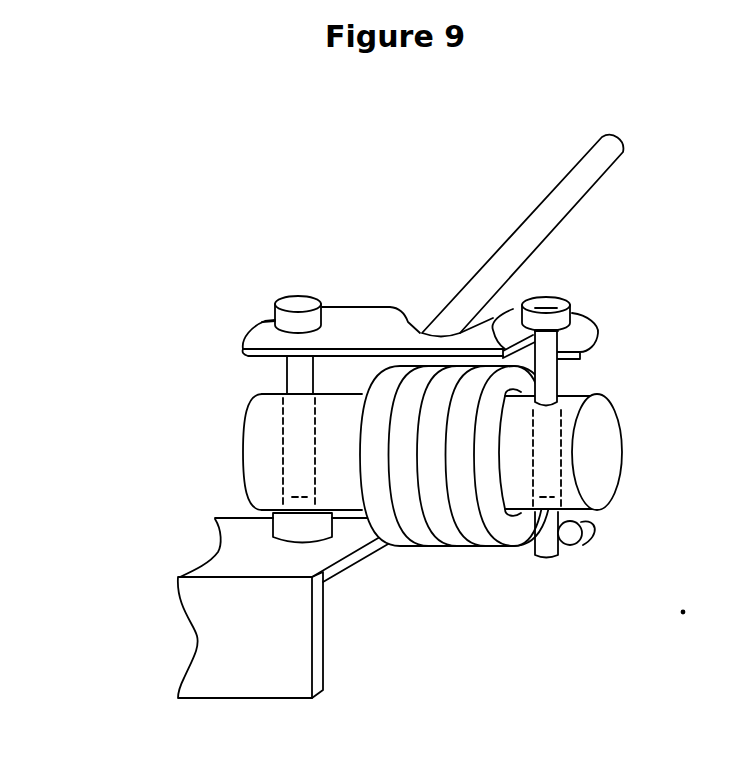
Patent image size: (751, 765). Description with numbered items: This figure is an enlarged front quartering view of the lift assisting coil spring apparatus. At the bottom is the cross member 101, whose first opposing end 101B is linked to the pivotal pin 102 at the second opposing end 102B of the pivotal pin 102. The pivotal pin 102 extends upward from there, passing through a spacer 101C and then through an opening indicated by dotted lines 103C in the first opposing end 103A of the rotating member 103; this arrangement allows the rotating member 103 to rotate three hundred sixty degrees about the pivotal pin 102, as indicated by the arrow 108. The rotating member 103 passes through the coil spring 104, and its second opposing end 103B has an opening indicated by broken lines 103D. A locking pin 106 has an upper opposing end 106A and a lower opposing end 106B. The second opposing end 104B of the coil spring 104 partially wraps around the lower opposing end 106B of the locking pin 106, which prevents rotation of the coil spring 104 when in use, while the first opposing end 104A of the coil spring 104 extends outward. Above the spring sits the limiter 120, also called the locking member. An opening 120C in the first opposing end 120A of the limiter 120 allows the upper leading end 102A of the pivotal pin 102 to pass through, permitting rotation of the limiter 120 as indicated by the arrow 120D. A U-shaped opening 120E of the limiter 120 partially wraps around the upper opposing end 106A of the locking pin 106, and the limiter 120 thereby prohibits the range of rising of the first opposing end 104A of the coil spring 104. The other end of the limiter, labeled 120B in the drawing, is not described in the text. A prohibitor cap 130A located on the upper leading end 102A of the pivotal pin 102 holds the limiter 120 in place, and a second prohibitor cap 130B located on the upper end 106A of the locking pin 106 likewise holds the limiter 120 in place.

The cross member 101 is at (233, 553).
The first opposing end of the cross member 101B is at (272, 597).
The spacer 101C is at (220, 518).
The pivotal pin 102 is at (297, 378).
The upper leading end of the pivotal pin 102A is at (283, 357).
The second opposing end of the pivotal pin 102B is at (300, 542).
The rotating member 103 is at (337, 477).
The first opposing end of the rotating member 103A is at (255, 450).
The second opposing end of the rotating member 103B is at (590, 455).
The opening in the first opposing end of the rotating member 103C is at (283, 488).
The opening in the second opposing end of the rotating member 103D is at (560, 411).
The coil spring 104 is at (510, 543).
The first opposing end of the coil spring 104A is at (587, 170).
The second opposing end of the coil spring 104B is at (572, 535).
The locking pin 106 is at (545, 373).
The upper opposing end of the locking pin 106A is at (573, 342).
The lower opposing end of the locking pin 106B is at (548, 548).
The arrow indicating rotation of the rotating member 108 is at (233, 421).
The limiter 120 is at (360, 330).
The first opposing end of the limiter 120A is at (250, 337).
The second plate tab 120B is at (580, 337).
The opening in the first opposing end of the limiter 120C is at (273, 320).
The arrow indicating rotation of the limiter 120D is at (257, 307).
The U-shaped opening of the limiter 120E is at (548, 304).
The prohibitor cap 130A is at (298, 304).
The prohibitor cap 130B is at (560, 300).